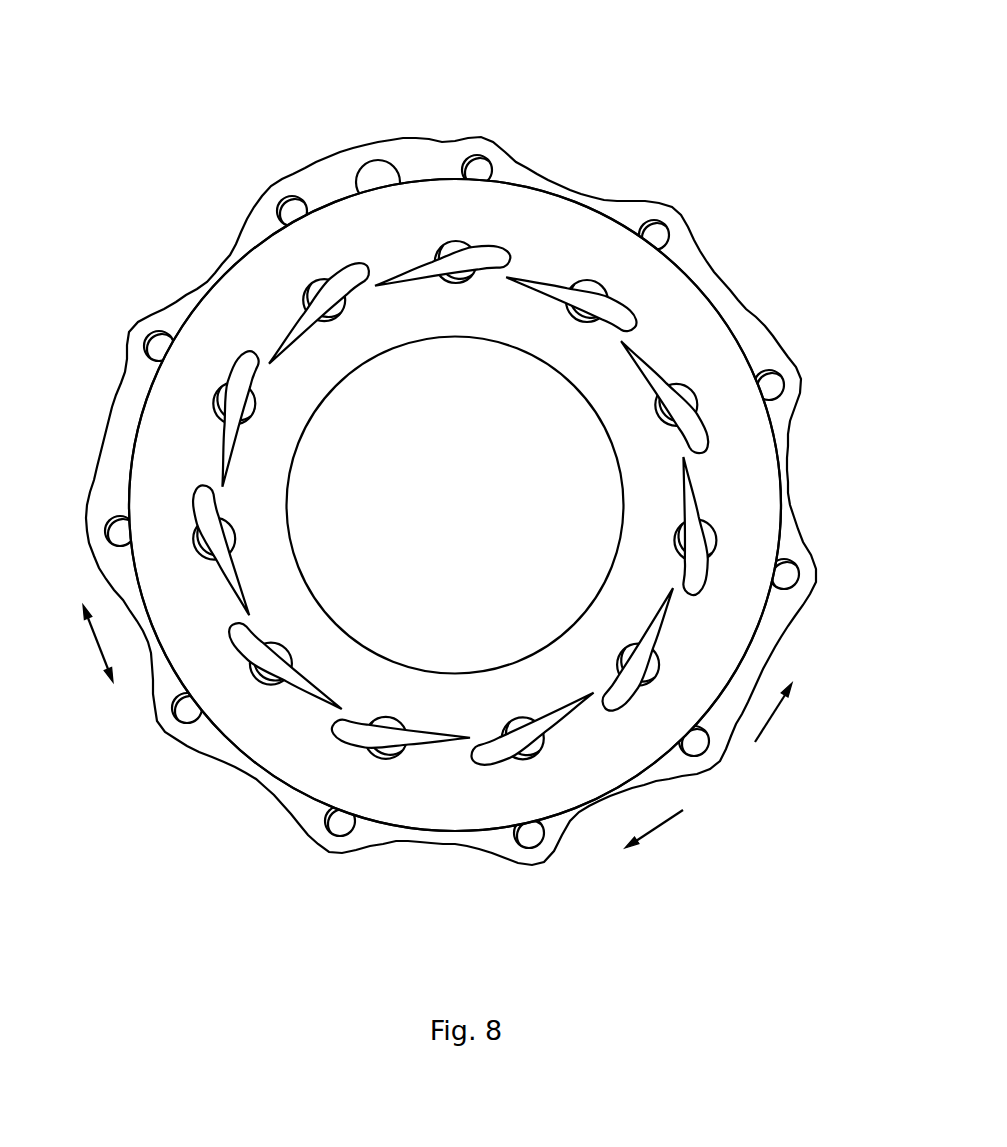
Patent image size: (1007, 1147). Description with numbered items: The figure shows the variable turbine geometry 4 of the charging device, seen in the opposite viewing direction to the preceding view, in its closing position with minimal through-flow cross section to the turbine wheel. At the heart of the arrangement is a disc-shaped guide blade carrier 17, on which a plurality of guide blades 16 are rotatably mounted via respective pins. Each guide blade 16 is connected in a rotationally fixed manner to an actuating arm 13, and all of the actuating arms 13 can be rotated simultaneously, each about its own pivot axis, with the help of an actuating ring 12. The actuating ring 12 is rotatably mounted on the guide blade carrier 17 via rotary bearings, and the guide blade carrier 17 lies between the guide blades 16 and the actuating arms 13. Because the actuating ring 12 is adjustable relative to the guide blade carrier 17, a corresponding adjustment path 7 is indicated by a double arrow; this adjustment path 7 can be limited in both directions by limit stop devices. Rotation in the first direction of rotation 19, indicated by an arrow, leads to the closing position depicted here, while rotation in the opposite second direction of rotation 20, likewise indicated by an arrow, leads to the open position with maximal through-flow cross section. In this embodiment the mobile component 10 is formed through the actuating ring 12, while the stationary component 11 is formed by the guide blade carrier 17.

The variable turbine geometry 4 is at (730, 180).
The adjustment path 7 is at (95, 645).
The mobile component 10 is at (230, 757).
The stationary component 11 is at (700, 363).
The actuating ring 12 is at (258, 787).
The actuating arms 13 is at (290, 216).
The guide blade 16 is at (353, 287).
The guide blade carrier 17 is at (712, 382).
The first direction of rotation 19 is at (660, 830).
The second direction of rotation 20 is at (773, 720).